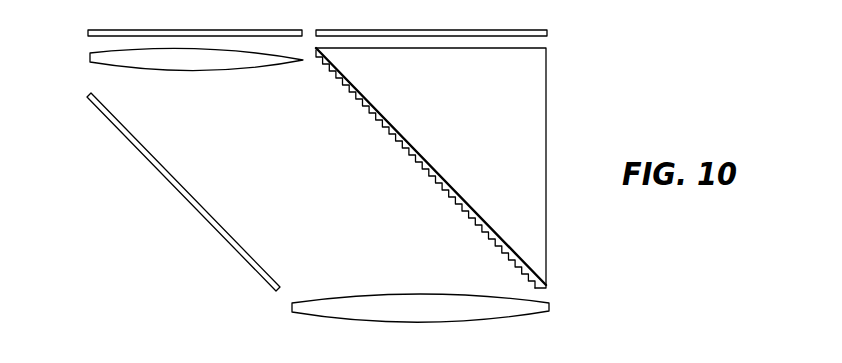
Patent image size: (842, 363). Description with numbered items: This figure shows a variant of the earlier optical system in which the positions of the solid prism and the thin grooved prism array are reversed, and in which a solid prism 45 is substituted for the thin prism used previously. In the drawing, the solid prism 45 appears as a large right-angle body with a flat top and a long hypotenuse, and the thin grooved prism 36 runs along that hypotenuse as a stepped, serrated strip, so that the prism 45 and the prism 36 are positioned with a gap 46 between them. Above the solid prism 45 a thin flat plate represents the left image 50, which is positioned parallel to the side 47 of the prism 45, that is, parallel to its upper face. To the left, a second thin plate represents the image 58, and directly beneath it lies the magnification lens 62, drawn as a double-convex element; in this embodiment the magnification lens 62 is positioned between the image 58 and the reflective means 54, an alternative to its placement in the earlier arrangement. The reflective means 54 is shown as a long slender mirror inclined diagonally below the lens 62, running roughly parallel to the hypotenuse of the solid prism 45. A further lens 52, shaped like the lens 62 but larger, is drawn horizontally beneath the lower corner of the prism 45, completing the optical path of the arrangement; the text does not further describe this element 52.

The prism 36 is at (482, 230).
The solid prism 45 is at (454, 168).
The gap 46 is at (520, 255).
The side of prism 47 is at (449, 48).
The left image 50 is at (538, 32).
The lower lens 52 is at (380, 308).
The reflective means 54 is at (252, 255).
The image 58 is at (103, 35).
The magnification lens 62 is at (267, 60).